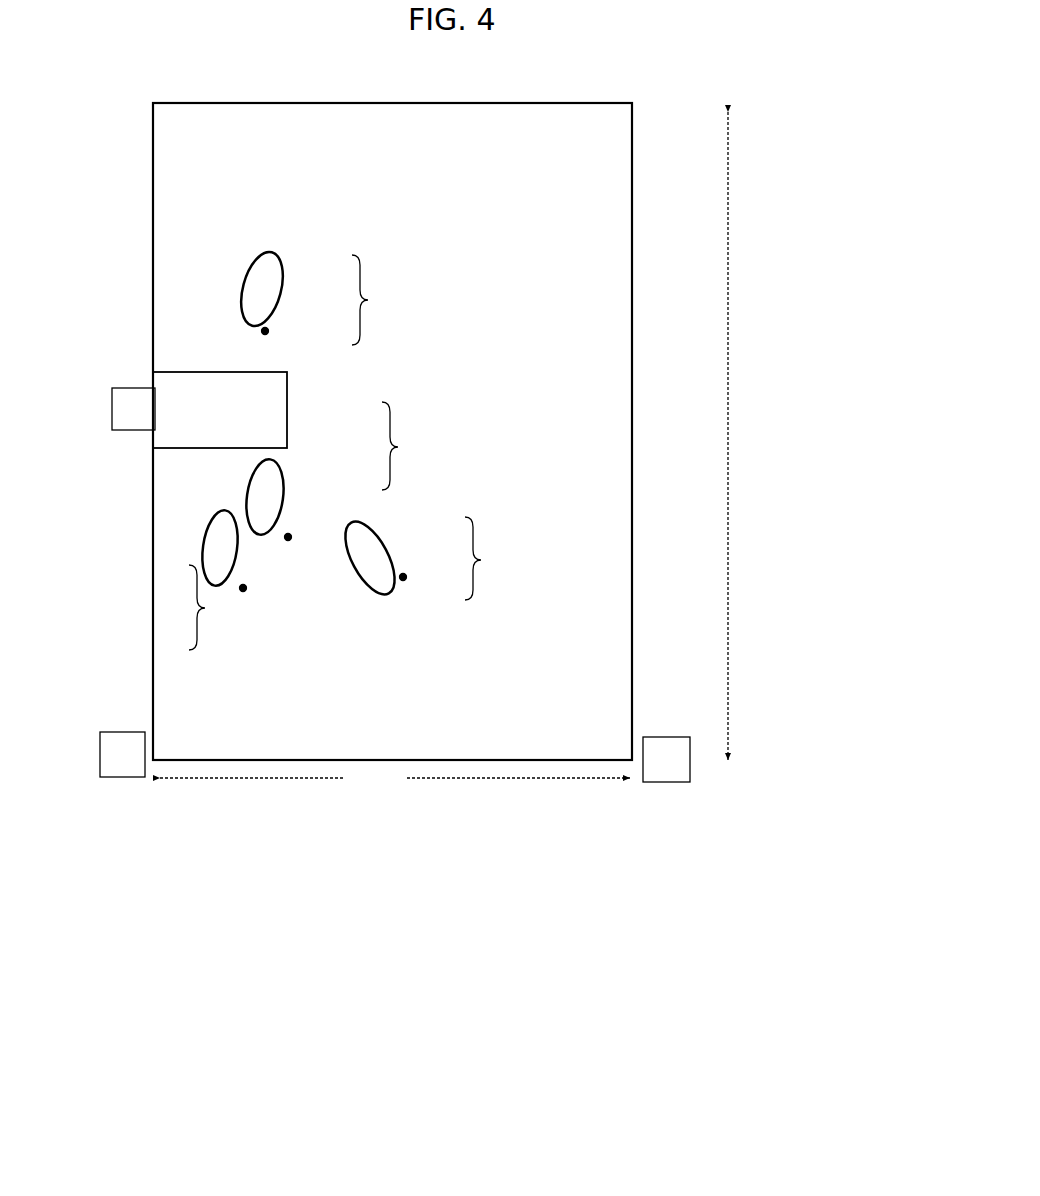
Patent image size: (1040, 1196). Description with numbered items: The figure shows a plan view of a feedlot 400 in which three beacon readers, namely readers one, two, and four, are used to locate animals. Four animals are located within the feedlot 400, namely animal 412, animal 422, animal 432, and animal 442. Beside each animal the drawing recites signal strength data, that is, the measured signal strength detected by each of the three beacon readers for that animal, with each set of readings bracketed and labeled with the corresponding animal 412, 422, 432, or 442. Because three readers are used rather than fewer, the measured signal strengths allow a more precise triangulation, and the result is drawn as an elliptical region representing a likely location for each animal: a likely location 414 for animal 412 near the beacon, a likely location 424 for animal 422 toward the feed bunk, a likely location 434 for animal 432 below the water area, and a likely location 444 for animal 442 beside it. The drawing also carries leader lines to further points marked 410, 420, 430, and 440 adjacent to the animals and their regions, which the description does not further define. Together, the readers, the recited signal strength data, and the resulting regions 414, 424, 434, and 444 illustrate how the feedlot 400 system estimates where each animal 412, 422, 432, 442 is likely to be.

The feedlot 400 is at (445, 950).
The pen / beacon 410 is at (255, 329).
The animal 412 is at (402, 315).
The likely location 414 is at (253, 293).
The first feed bunk animal position 420 is at (403, 577).
The animal 422 is at (521, 568).
The likely location 424 is at (370, 533).
The second animal position 430 is at (288, 537).
The animal 432 is at (429, 459).
The likely location 434 is at (262, 494).
The third animal position 440 is at (243, 588).
The animal 442 is at (239, 615).
The likely location 444 is at (218, 545).